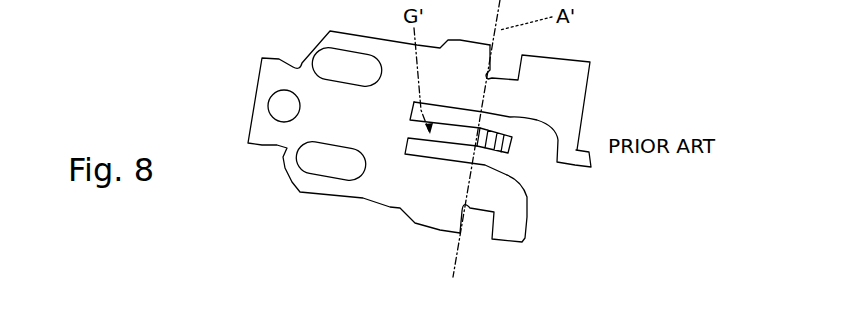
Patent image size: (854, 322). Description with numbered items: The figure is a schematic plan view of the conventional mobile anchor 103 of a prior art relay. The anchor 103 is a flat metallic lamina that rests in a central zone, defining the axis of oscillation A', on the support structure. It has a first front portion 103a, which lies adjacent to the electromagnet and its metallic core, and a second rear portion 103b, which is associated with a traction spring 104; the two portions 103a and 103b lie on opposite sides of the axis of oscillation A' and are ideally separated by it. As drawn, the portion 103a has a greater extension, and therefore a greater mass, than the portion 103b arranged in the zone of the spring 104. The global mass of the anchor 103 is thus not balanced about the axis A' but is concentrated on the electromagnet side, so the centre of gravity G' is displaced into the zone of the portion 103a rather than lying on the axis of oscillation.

The mobile anchor 103 is at (363, 197).
The first front portion 103a is at (371, 130).
The second rear portion 103b is at (561, 109).
The traction spring 104 is at (517, 162).